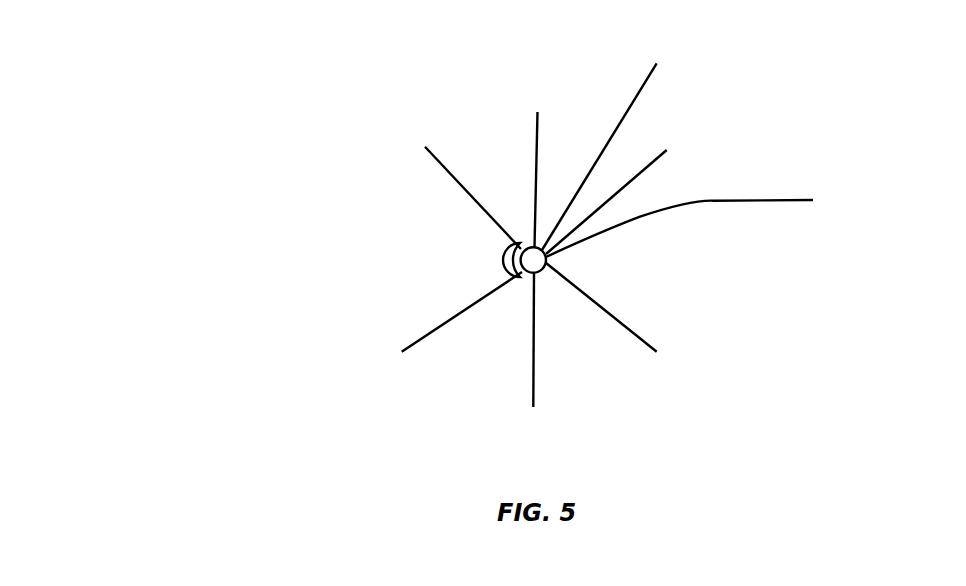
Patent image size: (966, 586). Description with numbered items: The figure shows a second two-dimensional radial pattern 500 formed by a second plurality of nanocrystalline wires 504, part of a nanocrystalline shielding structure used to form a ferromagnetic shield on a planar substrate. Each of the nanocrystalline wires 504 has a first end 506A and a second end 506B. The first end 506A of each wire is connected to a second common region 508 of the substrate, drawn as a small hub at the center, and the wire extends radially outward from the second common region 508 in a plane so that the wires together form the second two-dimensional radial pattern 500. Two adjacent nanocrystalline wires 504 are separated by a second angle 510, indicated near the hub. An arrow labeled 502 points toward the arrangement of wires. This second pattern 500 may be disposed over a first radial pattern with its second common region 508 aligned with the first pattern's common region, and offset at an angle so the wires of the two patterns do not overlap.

The second two-dimensional radial pattern 500 is at (182, 177).
The central hub assembly 502 is at (724, 151).
The second plurality of nanocrystalline wires 504 is at (460, 185).
The first end 506A is at (710, 226).
The second end 506B is at (657, 352).
The second common region 508 is at (657, 63).
The second angle 510 is at (503, 261).